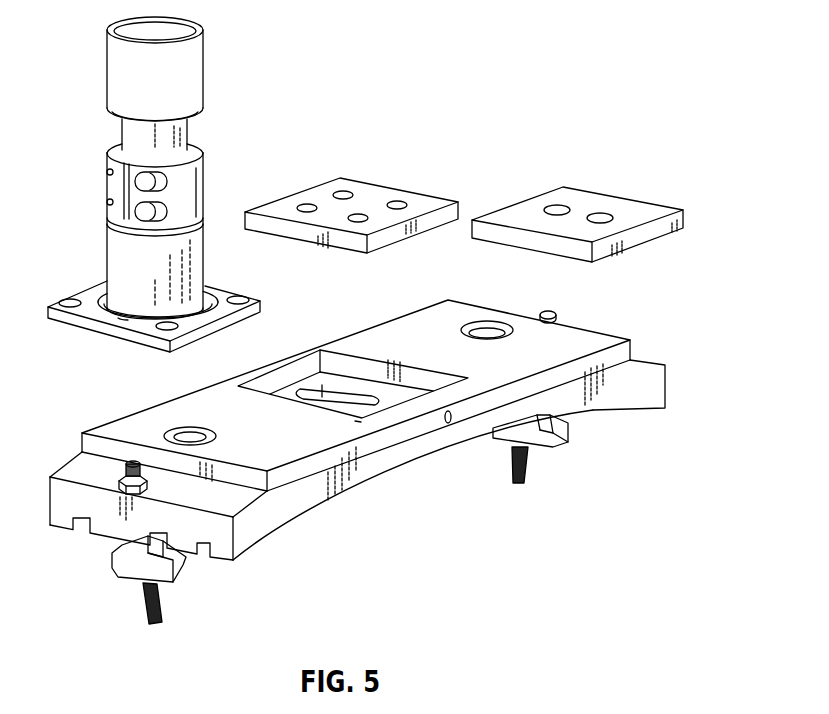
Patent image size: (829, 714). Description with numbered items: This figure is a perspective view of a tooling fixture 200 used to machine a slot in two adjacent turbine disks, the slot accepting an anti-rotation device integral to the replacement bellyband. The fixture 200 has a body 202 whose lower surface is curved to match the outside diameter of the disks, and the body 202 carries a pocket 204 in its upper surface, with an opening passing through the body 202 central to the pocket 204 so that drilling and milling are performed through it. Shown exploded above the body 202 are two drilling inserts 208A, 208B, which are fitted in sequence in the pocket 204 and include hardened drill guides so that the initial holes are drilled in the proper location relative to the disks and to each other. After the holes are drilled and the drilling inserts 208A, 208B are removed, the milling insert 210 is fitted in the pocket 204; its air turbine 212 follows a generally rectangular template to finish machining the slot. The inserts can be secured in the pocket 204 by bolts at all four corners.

The tooling fixture 200 is at (378, 320).
The body 202 is at (668, 386).
The pocket 204 is at (241, 384).
The drilling insert 208A is at (374, 188).
The drilling insert 208B is at (600, 196).
The milling insert 210 is at (88, 270).
The air turbine 212 is at (204, 184).